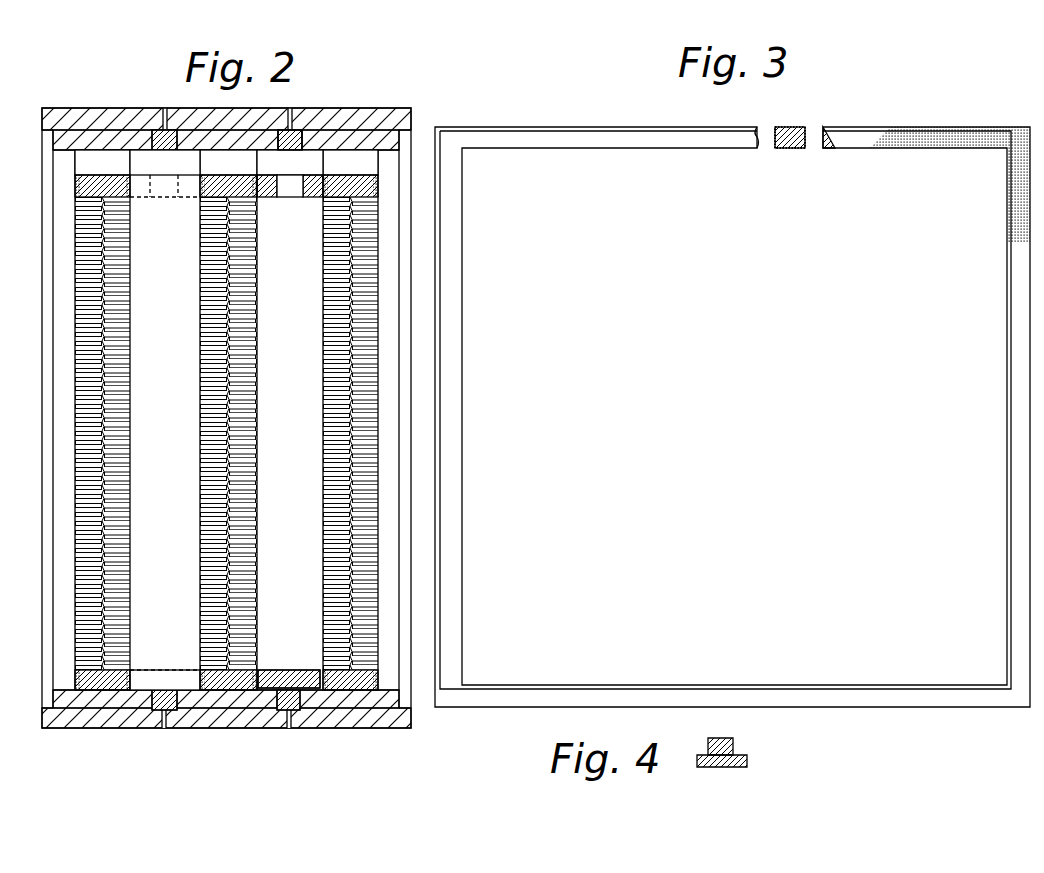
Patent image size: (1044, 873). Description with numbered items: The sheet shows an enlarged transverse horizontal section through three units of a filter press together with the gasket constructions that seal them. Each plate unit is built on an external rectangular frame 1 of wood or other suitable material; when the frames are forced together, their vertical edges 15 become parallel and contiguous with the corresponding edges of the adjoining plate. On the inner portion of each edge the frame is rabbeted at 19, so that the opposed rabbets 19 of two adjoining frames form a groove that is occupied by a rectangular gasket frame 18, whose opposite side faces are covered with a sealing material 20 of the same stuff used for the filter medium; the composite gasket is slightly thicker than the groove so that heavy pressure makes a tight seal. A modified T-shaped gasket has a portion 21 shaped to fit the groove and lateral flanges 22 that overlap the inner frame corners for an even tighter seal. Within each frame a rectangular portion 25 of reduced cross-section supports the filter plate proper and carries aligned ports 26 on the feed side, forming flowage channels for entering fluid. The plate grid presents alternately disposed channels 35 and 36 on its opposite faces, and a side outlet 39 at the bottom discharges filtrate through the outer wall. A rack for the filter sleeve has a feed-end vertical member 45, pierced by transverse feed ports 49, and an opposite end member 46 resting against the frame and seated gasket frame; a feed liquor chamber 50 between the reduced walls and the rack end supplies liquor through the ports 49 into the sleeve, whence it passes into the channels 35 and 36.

In FIG. 2, the external rectangular frame 1 is at (193, 119).
In FIG. 2, the vertical edges 15 is at (293, 130).
In FIG. 2, the gasket frame 18 is at (287, 157).
In FIG. 3, the gasket frame 18 is at (547, 137).
In FIG. 2, the rabbet 19 is at (328, 140).
In FIG. 2, the sealing material 20 is at (277, 143).
In FIG. 3, the sealing material 20 is at (930, 126).
In FIG. 4, the groove-fitting portion 21 is at (735, 744).
In FIG. 4, the lateral flanges 22 is at (720, 764).
In FIG. 2, the rectangular portion of reduced cross-section 25 is at (378, 172).
In FIG. 2, the ports 26 is at (85, 163).
In FIG. 2, the channels 35 is at (322, 402).
In FIG. 2, the opposite channels 36 is at (378, 282).
In FIG. 2, the side outlet 39 is at (100, 730).
In FIG. 2, the feed-end vertical rack member 45 is at (313, 193).
In FIG. 2, the opposite vertical end member 46 is at (272, 670).
In FIG. 2, the transverse feed ports 49 is at (283, 192).
In FIG. 2, the feed liquor chamber 50 is at (138, 158).